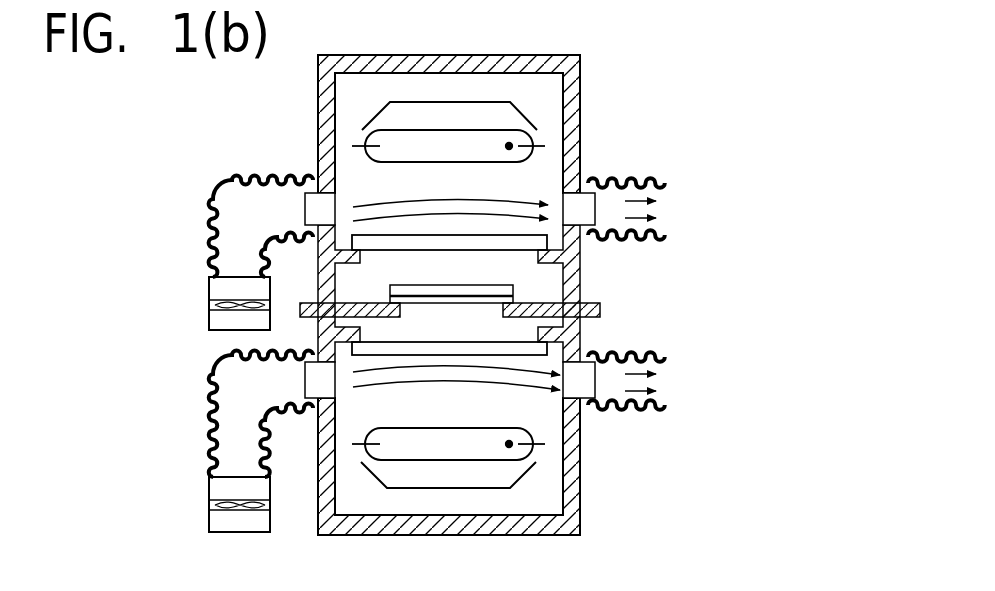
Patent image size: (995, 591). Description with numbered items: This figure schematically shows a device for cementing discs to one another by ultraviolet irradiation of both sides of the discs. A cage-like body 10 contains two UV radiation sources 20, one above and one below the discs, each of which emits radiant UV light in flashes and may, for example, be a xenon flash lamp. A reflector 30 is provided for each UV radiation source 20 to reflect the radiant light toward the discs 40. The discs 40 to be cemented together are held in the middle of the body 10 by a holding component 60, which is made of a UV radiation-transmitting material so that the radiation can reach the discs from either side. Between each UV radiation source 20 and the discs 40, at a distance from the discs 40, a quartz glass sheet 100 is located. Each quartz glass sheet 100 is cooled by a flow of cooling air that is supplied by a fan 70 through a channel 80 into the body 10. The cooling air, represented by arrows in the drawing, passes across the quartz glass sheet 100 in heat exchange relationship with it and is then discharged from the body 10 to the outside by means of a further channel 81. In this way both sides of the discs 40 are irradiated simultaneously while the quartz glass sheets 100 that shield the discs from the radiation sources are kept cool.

The cage-like body 10 is at (573, 62).
The UV radiation source 20 is at (533, 158).
The reflector 30 is at (516, 112).
The discs 40 is at (512, 295).
The holding component 60 is at (510, 320).
The fan 70 is at (209, 310).
The channel 80 is at (254, 180).
The channel 81 is at (638, 183).
The quartz glass sheet 100 is at (513, 252).